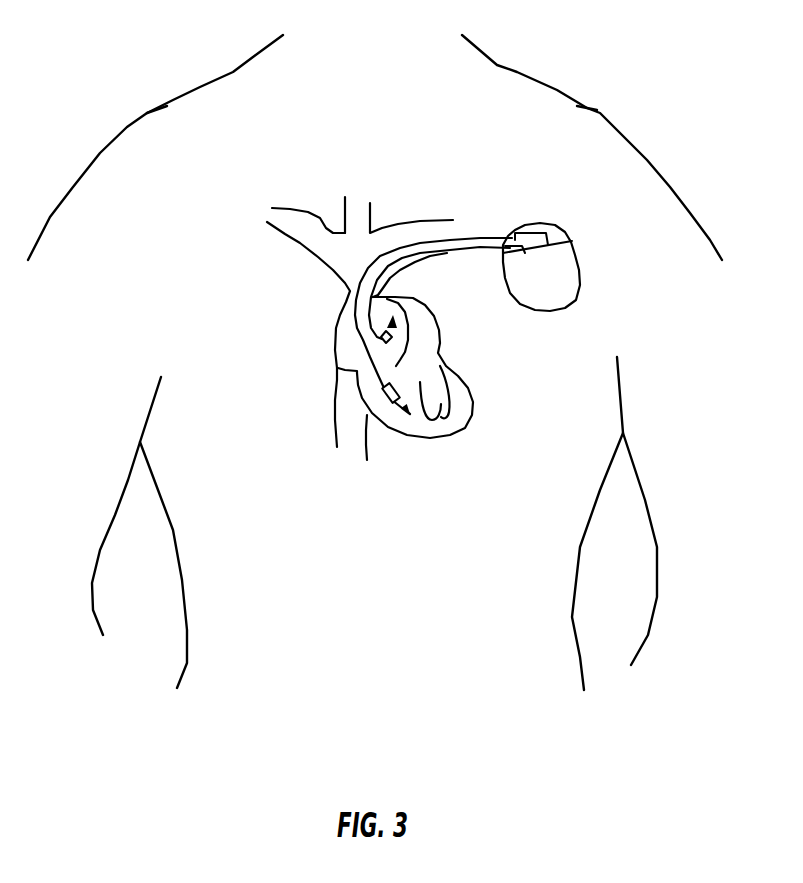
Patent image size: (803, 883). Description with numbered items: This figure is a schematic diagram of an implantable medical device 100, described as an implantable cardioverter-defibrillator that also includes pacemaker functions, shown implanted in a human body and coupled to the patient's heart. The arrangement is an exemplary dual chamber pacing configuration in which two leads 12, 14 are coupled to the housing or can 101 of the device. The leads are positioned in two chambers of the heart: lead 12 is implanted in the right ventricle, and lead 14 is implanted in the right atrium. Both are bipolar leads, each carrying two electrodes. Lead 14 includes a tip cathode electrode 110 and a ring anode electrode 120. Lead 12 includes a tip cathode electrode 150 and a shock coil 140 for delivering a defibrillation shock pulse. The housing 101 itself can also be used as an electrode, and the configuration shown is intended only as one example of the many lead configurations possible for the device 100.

The lead 12 is at (442, 298).
The lead 14 is at (477, 244).
The implantable medical device 100 is at (554, 271).
The housing 101 is at (508, 302).
The tip cathode electrode 110 is at (391, 326).
The ring anode electrode 120 is at (381, 340).
The shock coil 140 is at (391, 404).
The tip cathode electrode 150 is at (412, 420).